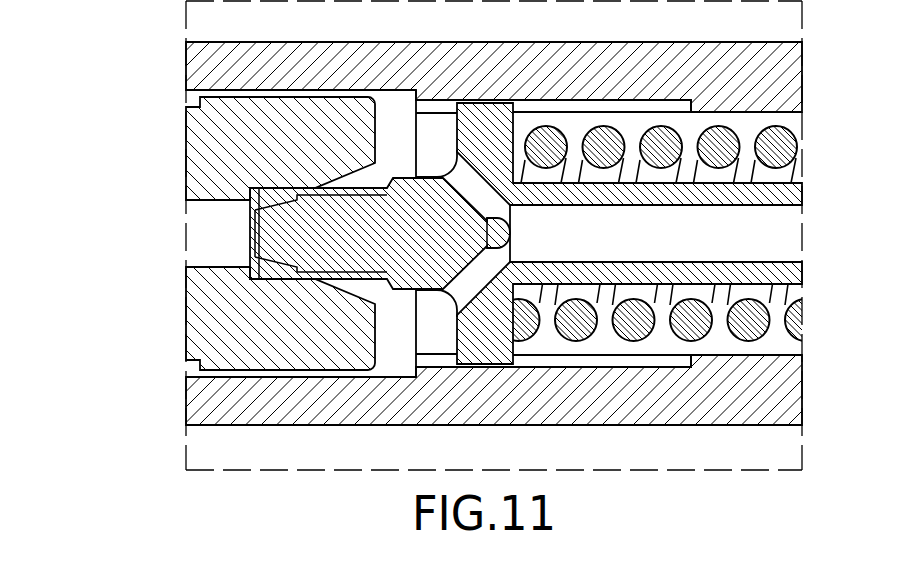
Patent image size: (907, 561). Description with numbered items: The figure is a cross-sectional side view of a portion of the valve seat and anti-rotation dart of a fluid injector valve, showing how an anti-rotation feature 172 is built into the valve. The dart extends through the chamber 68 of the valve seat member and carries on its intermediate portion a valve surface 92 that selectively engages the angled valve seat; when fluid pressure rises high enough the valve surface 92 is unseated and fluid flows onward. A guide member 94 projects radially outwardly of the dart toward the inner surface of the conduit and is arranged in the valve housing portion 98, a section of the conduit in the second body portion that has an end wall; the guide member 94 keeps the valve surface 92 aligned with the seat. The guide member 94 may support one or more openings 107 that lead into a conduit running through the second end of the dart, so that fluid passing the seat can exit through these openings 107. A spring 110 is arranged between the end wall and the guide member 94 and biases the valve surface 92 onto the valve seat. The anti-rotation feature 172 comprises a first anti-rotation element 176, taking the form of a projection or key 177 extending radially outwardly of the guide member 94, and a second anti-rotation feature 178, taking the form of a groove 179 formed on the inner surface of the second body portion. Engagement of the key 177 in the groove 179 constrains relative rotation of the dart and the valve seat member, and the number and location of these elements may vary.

The chamber 68 is at (202, 228).
The valve surface 92 is at (317, 187).
The guide member 94 is at (503, 347).
The valve housing portion 98 is at (717, 338).
The openings 107 is at (462, 278).
The spring 110 is at (753, 328).
The anti-rotation feature 172 is at (442, 372).
The first anti-rotation element 176 is at (520, 96).
The key 177 is at (480, 96).
The second anti-rotation feature 178 is at (606, 96).
The groove 179 is at (667, 98).